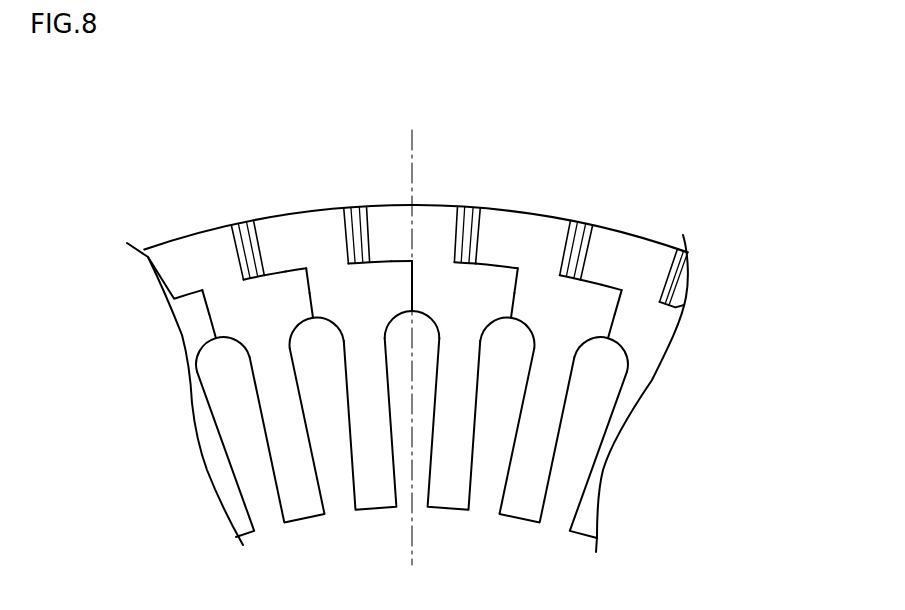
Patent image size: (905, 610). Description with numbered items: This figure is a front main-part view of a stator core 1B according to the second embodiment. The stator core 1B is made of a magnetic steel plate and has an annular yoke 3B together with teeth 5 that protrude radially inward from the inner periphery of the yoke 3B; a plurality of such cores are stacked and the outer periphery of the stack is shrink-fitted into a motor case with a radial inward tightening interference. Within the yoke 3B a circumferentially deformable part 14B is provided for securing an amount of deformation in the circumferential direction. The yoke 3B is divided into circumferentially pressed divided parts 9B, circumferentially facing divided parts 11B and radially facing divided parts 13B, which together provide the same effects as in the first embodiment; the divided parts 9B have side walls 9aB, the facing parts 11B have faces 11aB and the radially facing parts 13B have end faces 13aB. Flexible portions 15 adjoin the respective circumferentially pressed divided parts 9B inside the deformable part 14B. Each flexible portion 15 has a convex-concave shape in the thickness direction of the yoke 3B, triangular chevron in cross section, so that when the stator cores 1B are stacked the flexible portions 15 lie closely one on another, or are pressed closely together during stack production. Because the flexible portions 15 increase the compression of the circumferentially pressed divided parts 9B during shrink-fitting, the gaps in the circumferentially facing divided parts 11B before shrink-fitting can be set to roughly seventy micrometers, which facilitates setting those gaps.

The stator core 1B is at (550, 186).
The yoke 3B is at (532, 228).
The teeth 5 is at (303, 508).
The circumferentially pressed divided parts 9B is at (232, 224).
The groove side wall 9aB is at (347, 235).
The circumferentially facing divided parts 11B is at (411, 288).
The engaging step upper face 11aB is at (414, 273).
The radially facing divided parts 13B is at (380, 258).
The inner face end portion 13aB is at (400, 262).
The circumferentially deformable part 14B is at (648, 256).
The flexible portions 15 is at (245, 222).